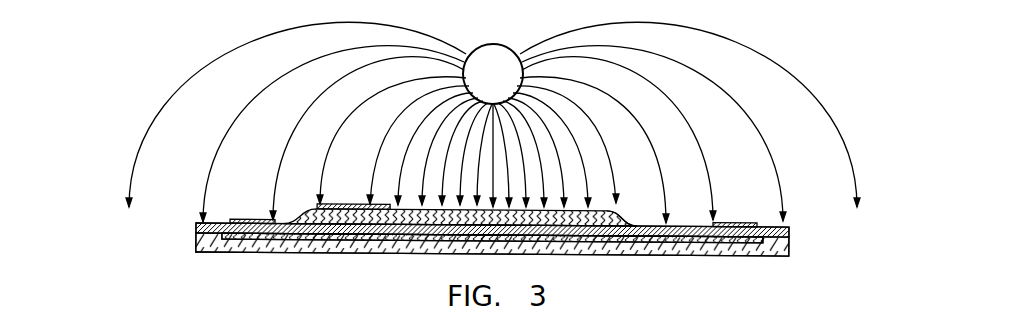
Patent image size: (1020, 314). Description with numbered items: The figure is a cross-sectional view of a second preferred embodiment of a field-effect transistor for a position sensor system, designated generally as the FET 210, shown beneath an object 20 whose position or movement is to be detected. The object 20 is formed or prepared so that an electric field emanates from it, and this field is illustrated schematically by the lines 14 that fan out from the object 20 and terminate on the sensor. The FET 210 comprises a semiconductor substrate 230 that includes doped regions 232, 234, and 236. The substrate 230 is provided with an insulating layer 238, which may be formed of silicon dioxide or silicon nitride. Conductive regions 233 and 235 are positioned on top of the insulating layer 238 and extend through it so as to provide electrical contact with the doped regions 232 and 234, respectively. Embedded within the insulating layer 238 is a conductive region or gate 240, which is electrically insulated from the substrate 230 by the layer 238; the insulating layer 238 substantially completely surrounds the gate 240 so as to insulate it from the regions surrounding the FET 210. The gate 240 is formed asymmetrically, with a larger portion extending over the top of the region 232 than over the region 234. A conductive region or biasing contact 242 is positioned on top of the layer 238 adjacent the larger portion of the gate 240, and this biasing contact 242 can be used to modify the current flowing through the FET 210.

The electric field lines 14 is at (813, 97).
The object 20 is at (491, 62).
The FET 210 is at (185, 173).
The semiconductor substrate 230 is at (196, 241).
The doped region 232 is at (362, 234).
The conductive region 233 is at (255, 219).
The doped region 234 is at (636, 248).
The conductive region 235 is at (748, 219).
The doped region 236 is at (493, 238).
The insulating layer 238 is at (630, 222).
The gate 240 is at (607, 212).
The biasing contact 242 is at (330, 203).